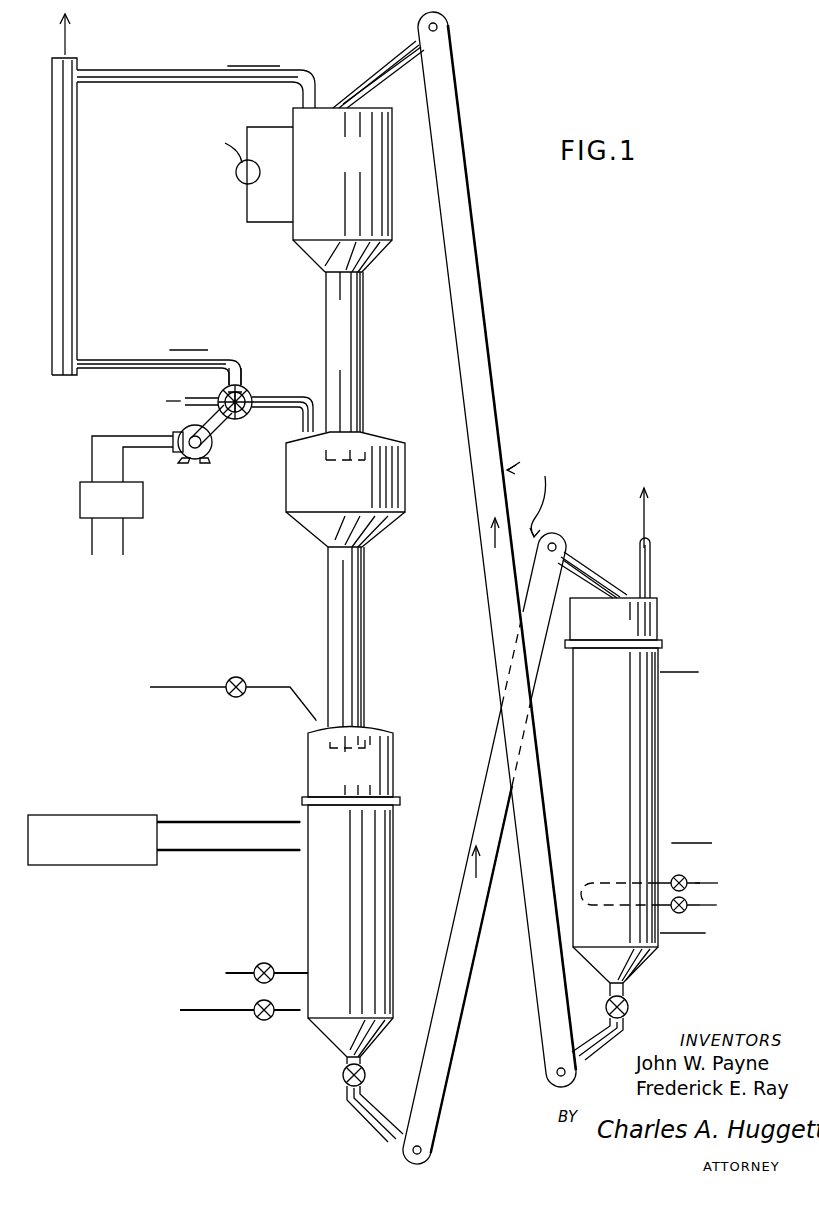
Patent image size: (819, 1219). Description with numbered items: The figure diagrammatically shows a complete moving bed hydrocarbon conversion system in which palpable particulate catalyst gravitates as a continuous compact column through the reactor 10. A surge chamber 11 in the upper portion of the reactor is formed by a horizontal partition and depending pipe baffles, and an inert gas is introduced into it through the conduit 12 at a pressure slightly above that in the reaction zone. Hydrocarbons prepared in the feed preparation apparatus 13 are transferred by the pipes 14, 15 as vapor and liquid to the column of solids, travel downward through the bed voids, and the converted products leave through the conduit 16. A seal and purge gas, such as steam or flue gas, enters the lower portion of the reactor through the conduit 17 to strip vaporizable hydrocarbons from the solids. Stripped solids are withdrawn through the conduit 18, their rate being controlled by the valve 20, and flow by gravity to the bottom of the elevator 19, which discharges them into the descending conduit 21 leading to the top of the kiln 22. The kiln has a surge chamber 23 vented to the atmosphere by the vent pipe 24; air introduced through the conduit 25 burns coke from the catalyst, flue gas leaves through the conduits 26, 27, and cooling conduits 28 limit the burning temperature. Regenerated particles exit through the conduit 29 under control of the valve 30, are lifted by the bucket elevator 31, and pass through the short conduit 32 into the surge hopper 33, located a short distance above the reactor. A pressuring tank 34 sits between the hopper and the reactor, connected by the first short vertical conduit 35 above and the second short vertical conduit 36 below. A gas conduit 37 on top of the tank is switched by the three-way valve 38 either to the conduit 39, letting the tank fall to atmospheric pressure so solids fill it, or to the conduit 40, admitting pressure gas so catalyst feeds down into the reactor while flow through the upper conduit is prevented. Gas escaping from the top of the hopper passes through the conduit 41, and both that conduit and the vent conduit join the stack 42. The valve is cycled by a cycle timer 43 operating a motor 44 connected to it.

The reactor 10 is at (402, 901).
The surge chamber 11 is at (394, 752).
The conduit 12 is at (278, 685).
The feed preparation apparatus 13 is at (128, 815).
The pipe 14 is at (276, 818).
The pipe 15 is at (256, 853).
The conduit 16 is at (240, 971).
The conduit 17 is at (246, 1012).
The conduit 18 is at (371, 1119).
The elevator 19 is at (449, 1052).
The valve 20 is at (343, 1076).
The descending conduit 21 is at (606, 568).
The kiln 22 is at (663, 787).
The surge chamber 23 is at (658, 612).
The vent pipe 24 is at (649, 568).
The conduit 25 is at (700, 843).
The conduit 26 is at (676, 678).
The conduit 27 is at (673, 936).
The cooling conduits 28 is at (665, 882).
The conduit 29 is at (625, 1036).
The valve 30 is at (628, 1006).
The bucket elevator 31 is at (489, 391).
The short conduit 32 is at (383, 62).
The surge hopper 33 is at (392, 207).
The pressuring tank 34 is at (405, 498).
The first short vertical conduit 35 is at (364, 378).
The second short vertical conduit 36 is at (366, 700).
The gas conduit 37 is at (281, 397).
The three-way valve 38 is at (248, 392).
The conduit 39 is at (130, 360).
The conduit 40 is at (204, 400).
The conduit 41 is at (193, 58).
The stack 42 is at (72, 322).
The cycle timer 43 is at (143, 518).
The motor 44 is at (214, 446).